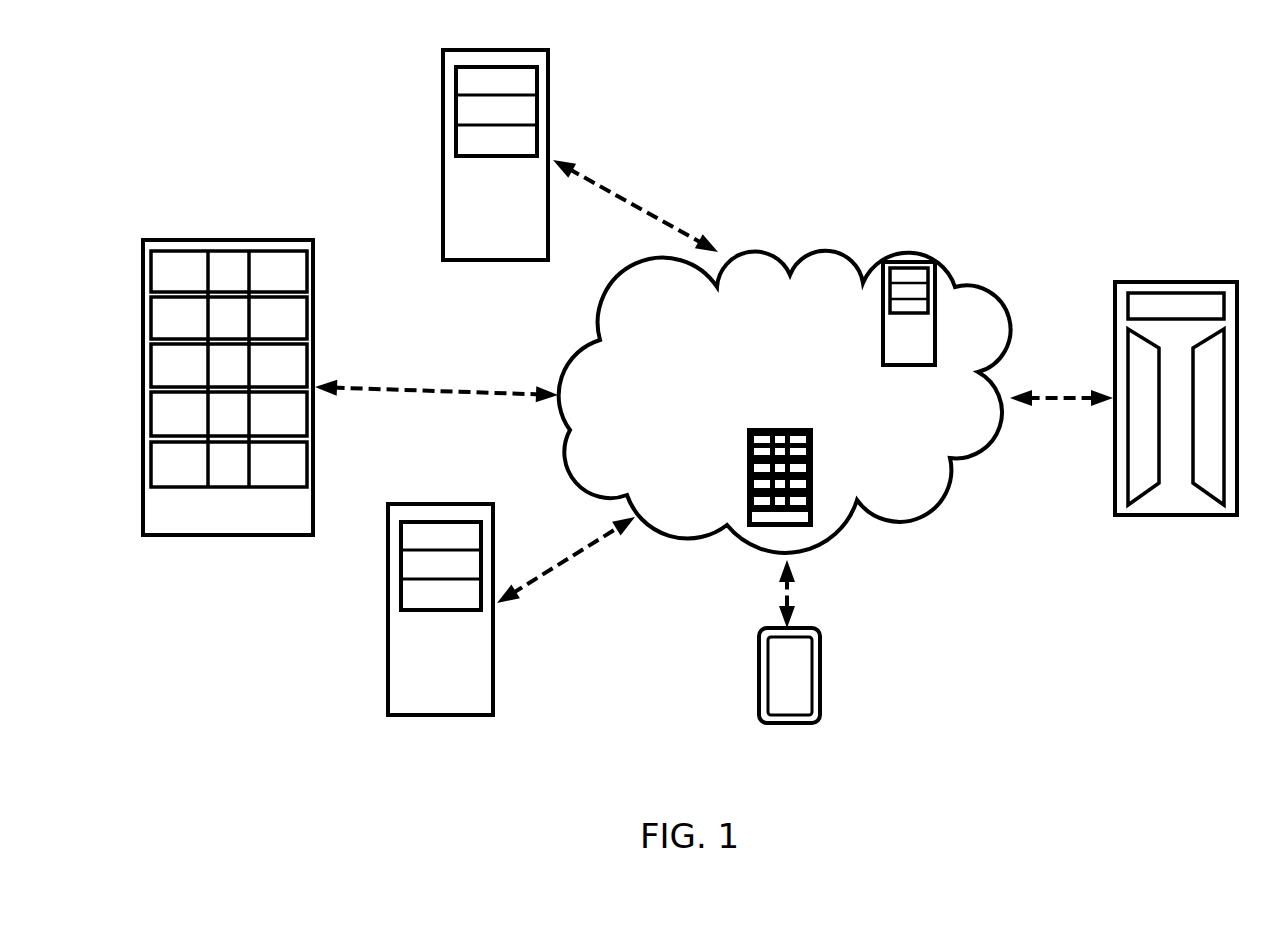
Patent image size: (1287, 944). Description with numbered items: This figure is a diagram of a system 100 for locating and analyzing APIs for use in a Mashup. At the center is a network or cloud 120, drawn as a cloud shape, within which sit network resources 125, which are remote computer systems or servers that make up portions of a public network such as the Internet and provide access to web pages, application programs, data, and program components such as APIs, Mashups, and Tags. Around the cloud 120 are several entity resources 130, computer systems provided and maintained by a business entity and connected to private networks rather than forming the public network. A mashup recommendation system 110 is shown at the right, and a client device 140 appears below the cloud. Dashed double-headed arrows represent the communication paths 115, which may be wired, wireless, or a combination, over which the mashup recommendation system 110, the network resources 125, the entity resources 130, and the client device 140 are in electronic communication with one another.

The system 100 is at (222, 130).
The mashup recommendation system 110 is at (1174, 490).
The communication path 115 is at (388, 388).
The cloud 120 is at (751, 292).
The network resource 125 is at (921, 334).
The entity resource 130 is at (229, 513).
The client device 140 is at (795, 681).